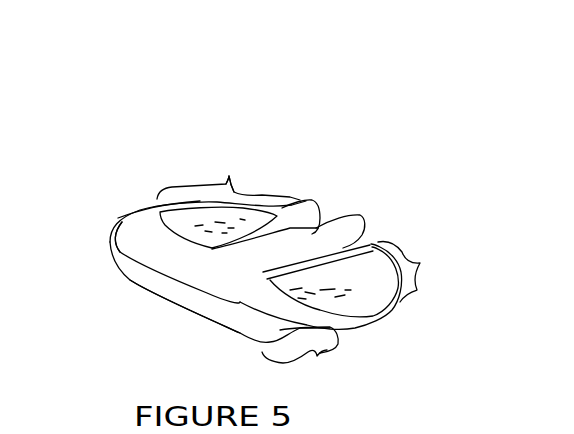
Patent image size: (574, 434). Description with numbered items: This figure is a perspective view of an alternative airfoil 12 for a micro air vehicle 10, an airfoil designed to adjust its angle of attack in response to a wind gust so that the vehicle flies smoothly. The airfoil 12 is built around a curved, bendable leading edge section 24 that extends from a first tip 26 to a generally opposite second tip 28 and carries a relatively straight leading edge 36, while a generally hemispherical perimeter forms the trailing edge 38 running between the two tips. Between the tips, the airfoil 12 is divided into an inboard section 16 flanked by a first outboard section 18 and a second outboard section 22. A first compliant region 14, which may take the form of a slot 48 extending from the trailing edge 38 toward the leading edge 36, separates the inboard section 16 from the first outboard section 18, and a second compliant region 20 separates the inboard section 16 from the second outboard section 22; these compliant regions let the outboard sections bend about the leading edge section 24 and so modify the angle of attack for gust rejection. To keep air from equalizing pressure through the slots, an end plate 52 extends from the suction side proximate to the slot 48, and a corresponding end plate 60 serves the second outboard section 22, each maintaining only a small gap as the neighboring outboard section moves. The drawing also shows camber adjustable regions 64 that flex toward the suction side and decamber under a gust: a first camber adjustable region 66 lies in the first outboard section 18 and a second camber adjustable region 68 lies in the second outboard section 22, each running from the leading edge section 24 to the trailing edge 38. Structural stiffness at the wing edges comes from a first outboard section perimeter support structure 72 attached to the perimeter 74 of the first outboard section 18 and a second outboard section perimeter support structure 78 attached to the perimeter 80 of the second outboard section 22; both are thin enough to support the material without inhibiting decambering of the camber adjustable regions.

The micro air vehicle 10 is at (387, 128).
The airfoil 12 is at (184, 132).
The first compliant region 14 is at (363, 240).
The inboard section 16 is at (260, 262).
The first outboard section 18 is at (423, 262).
The second compliant region 20 is at (140, 235).
The second outboard section 22 is at (226, 169).
The leading edge section 24 is at (299, 371).
The first tip 26 is at (358, 323).
The second tip 28 is at (130, 218).
The leading edge 36 is at (163, 302).
The trailing edge 38 is at (325, 223).
The slot 48 is at (373, 247).
The end plate 52 is at (343, 232).
The end plate 60 is at (310, 200).
The camber adjustable region 64 is at (178, 217).
The first camber adjustable region 66 is at (383, 293).
The second camber adjustable region 68 is at (190, 215).
The first outboard section perimeter support structure 72 is at (403, 293).
The perimeter 74 is at (385, 243).
The second outboard section perimeter support structure 78 is at (243, 212).
The perimeter 80 is at (249, 213).